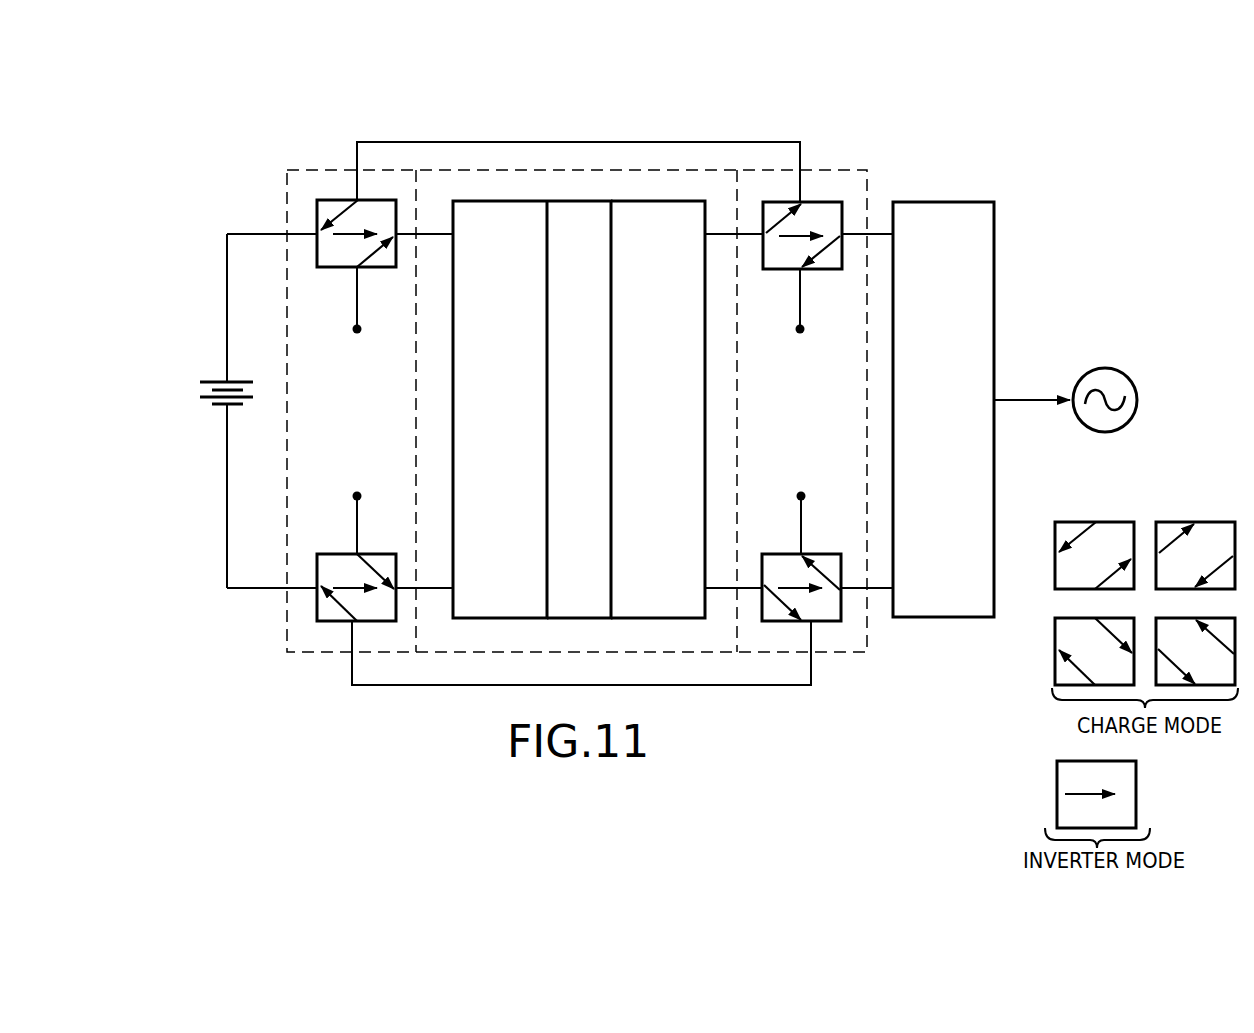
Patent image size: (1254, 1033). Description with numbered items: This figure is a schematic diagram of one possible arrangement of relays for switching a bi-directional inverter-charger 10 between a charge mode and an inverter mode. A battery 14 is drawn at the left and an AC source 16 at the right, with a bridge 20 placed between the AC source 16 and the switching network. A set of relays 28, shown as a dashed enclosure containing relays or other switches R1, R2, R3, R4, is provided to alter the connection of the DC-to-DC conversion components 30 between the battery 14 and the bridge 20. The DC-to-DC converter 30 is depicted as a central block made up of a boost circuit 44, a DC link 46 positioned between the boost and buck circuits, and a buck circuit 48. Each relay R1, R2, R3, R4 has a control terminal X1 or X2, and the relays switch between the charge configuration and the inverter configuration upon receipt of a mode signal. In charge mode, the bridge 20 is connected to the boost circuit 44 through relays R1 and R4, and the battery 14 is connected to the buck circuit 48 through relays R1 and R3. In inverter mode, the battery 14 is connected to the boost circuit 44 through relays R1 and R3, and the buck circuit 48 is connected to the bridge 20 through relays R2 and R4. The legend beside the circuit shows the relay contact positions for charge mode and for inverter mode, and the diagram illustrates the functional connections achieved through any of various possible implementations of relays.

The bi-directional inverter-charger 10 is at (682, 132).
The battery 14 is at (207, 404).
The AC source 16 is at (1138, 400).
The bridge 20 is at (953, 618).
The set of relays 28 is at (843, 168).
The DC-to-DC converter 30 is at (658, 652).
The boost circuit 44 is at (500, 409).
The DC link 46 is at (579, 409).
The buck circuit 48 is at (658, 409).
The relay R1 is at (372, 270).
The relay R2 is at (810, 272).
The relay R3 is at (345, 554).
The relay R4 is at (788, 554).
The terminal X1 is at (576, 317).
The terminal X2 is at (577, 506).